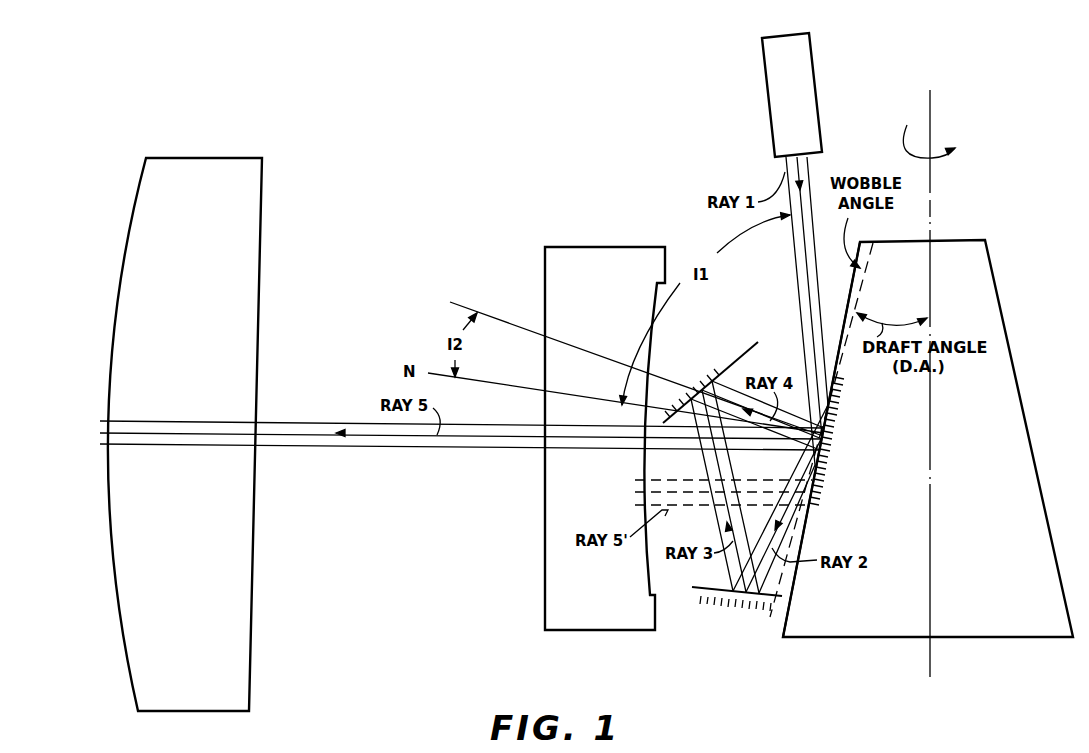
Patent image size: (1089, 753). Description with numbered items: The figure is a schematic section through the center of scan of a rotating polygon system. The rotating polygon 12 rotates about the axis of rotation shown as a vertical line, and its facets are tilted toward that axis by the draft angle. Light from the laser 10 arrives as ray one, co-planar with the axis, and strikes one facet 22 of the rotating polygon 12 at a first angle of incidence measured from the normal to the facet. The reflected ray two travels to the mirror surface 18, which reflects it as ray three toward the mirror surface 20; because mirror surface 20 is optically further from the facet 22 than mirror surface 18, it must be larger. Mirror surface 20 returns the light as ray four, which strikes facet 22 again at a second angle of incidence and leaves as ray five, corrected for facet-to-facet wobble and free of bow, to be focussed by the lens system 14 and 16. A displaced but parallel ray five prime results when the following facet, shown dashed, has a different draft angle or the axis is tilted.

The laser 10 is at (815, 63).
The rotating polygon 12 is at (1007, 638).
The lens system 14 is at (580, 632).
The lens system 16 is at (252, 652).
The mirror surface 18 is at (697, 590).
The mirror surface 20 is at (740, 357).
The facet 22 is at (782, 623).